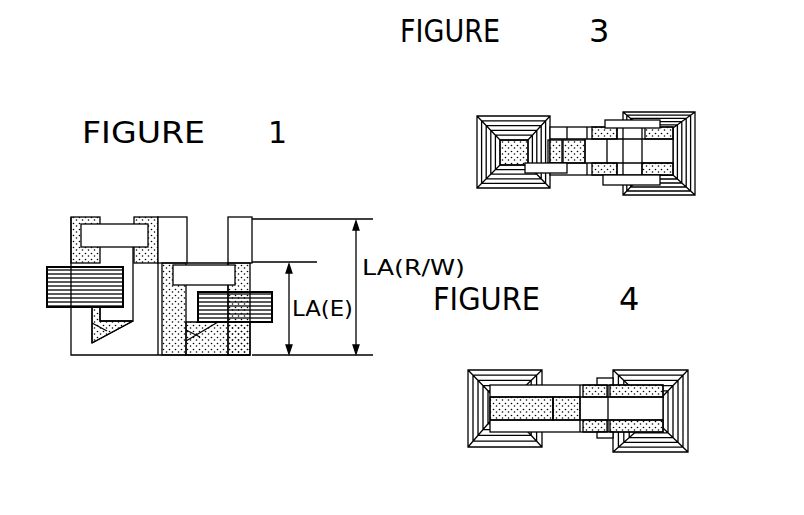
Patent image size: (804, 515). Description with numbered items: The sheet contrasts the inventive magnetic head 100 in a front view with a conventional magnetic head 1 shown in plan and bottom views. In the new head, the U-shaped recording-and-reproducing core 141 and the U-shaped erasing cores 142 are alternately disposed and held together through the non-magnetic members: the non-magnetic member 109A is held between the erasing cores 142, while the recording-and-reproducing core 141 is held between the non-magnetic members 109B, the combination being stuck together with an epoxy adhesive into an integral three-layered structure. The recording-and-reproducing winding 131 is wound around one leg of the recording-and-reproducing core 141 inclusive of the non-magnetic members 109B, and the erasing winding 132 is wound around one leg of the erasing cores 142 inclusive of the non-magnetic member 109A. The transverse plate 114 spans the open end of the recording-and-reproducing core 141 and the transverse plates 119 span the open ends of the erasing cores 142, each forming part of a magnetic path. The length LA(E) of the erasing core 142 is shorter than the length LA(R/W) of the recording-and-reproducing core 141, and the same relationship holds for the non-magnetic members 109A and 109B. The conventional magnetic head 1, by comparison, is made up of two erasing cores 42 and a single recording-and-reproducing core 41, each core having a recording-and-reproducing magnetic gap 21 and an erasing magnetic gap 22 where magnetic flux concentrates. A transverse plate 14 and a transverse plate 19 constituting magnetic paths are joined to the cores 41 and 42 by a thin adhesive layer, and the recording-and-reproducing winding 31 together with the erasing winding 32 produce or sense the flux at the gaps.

In FIG. 1, the magnetic head 100 is at (350, 194).
In FIG. 1, the non-magnetic member 109A is at (235, 243).
In FIG. 1, the non-magnetic member 109B is at (137, 338).
In FIG. 1, the transverse plate 114 is at (117, 222).
In FIG. 1, the transverse plate 119 is at (200, 264).
In FIG. 1, the recording-and-reproducing winding 131 is at (55, 308).
In FIG. 1, the erasing winding 132 is at (262, 323).
In FIG. 1, the recording-and-reproducing core 141 is at (71, 235).
In FIG. 1, the erasing core 142 is at (199, 357).
In FIG. 3, the magnetic head 1 is at (681, 107).
In FIG. 4, the magnetic head 1 is at (682, 366).
In FIG. 3, the transverse plate 14 is at (557, 183).
In FIG. 3, the transverse plate 19 is at (578, 130).
In FIG. 4, the recording-and-reproducing magnetic gap 21 is at (558, 412).
In FIG. 4, the erasing magnetic gap 22 is at (597, 388).
In FIG. 3, the recording-and-reproducing winding 31 is at (497, 118).
In FIG. 4, the recording-and-reproducing winding 31 is at (485, 448).
In FIG. 3, the erasing winding 32 is at (694, 110).
In FIG. 4, the erasing winding 32 is at (650, 442).
In FIG. 3, the recording-and-reproducing core 41 is at (568, 140).
In FIG. 4, the recording-and-reproducing core 41 is at (510, 396).
In FIG. 3, the erasing cores 42 is at (650, 130).
In FIG. 4, the erasing cores 42 is at (650, 388).